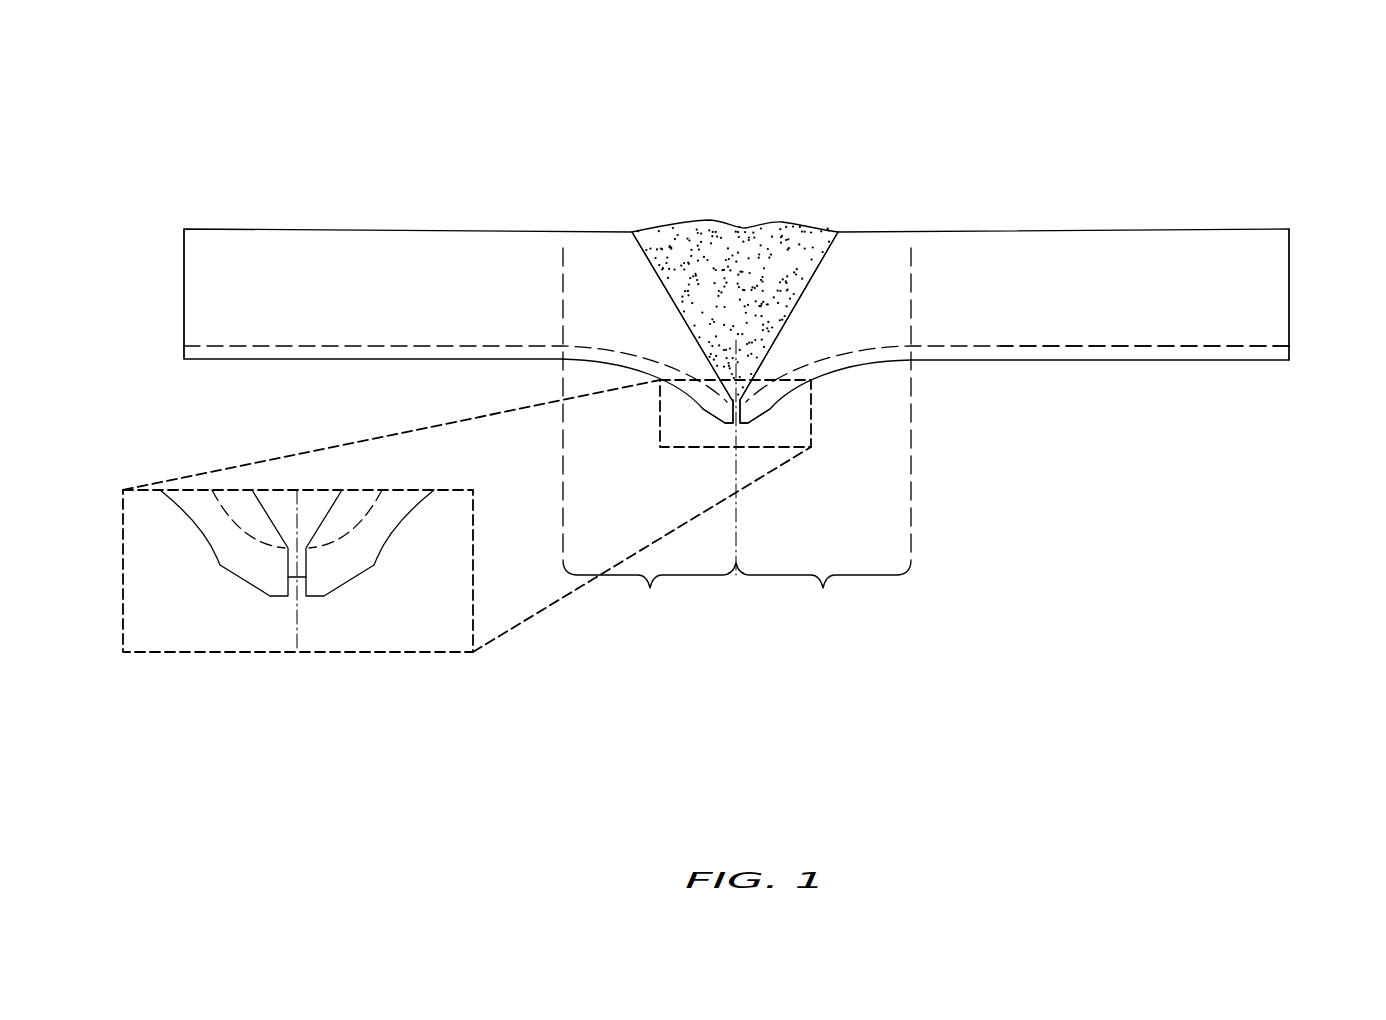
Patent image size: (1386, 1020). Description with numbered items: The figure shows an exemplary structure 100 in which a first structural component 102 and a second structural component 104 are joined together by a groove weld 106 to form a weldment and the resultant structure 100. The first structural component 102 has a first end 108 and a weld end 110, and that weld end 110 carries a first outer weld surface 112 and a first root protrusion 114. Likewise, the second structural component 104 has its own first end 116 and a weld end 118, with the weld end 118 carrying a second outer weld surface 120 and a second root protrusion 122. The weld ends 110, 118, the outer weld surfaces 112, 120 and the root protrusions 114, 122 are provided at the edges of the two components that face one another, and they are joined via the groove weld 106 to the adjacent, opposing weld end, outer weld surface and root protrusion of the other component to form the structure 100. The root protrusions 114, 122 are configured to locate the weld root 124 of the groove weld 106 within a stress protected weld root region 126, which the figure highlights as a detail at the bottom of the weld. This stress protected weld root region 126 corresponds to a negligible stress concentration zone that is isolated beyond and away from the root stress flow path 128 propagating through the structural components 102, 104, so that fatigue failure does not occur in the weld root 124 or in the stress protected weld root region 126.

The structure 100 is at (1276, 90).
The first structural component 102 is at (450, 213).
The second structural component 104 is at (1022, 212).
The groove weld 106 is at (745, 226).
The first end 108 is at (195, 370).
The weld end 110 is at (649, 435).
The first outer weld surface 112 is at (662, 272).
The first root protrusion 114 is at (694, 403).
The first end 116 is at (1279, 373).
The weld end 118 is at (823, 435).
The second outer weld surface 120 is at (801, 271).
The second root protrusion 122 is at (778, 403).
The weld root 124 is at (300, 578).
The stress protected weld root region 126 is at (811, 393).
The root stress flow path 128 is at (1095, 346).